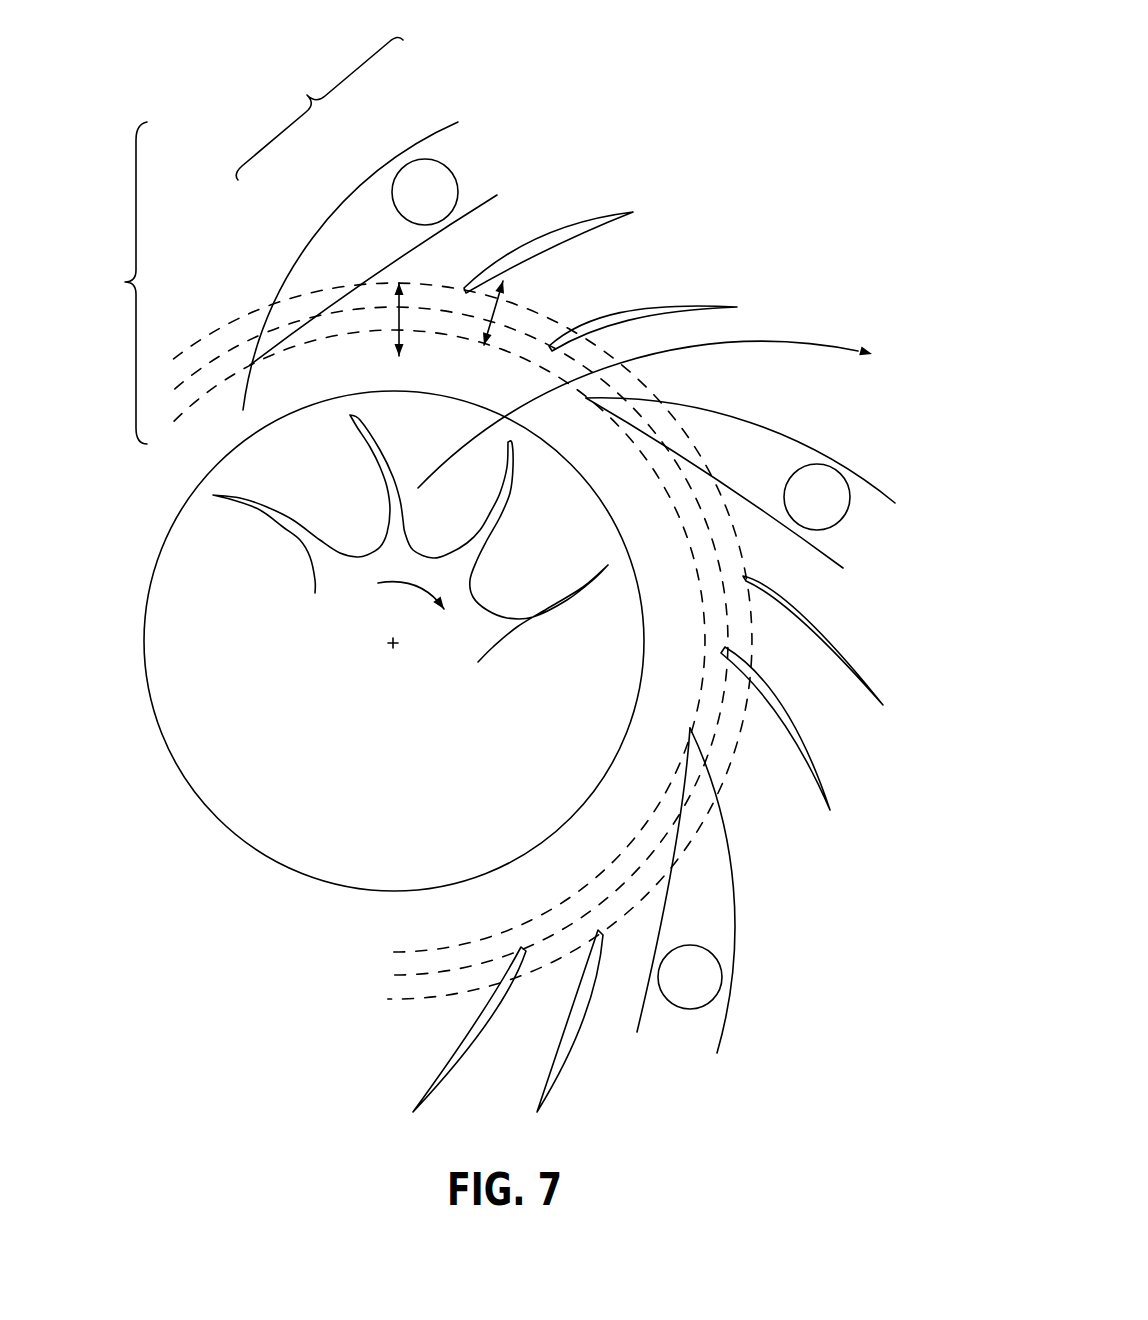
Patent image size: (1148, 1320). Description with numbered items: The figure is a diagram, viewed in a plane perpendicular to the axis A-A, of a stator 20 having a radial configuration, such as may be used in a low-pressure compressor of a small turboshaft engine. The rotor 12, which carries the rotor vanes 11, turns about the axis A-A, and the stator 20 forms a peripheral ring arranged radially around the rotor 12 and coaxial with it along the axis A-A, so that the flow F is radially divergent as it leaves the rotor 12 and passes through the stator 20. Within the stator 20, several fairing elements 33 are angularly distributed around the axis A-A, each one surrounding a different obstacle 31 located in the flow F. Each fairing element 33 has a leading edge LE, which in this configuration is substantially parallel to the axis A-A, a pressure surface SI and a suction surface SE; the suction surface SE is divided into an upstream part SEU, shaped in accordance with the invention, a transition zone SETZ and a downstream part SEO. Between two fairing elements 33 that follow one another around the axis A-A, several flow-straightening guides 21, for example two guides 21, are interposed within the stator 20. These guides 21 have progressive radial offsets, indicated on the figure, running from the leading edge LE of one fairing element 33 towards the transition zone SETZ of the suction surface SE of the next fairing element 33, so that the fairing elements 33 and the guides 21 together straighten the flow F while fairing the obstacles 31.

The vanes of rotor 11 is at (507, 519).
The rotor 12 is at (367, 623).
The stator 20 is at (120, 283).
The flow-straightening guides 21 is at (578, 223).
The obstacle 31 is at (451, 210).
The fairing element 33 is at (370, 260).
The suction surface SE is at (319, 108).
The downstream part of suction surface SEO is at (480, 199).
The transition zone of suction surface SETZ is at (393, 253).
The upstream part of suction surface SEU is at (317, 317).
The pressure surface SI is at (277, 280).
The leading edge LE is at (240, 415).
The flow F is at (792, 341).
The common axis of rotor and stator A-A is at (391, 649).